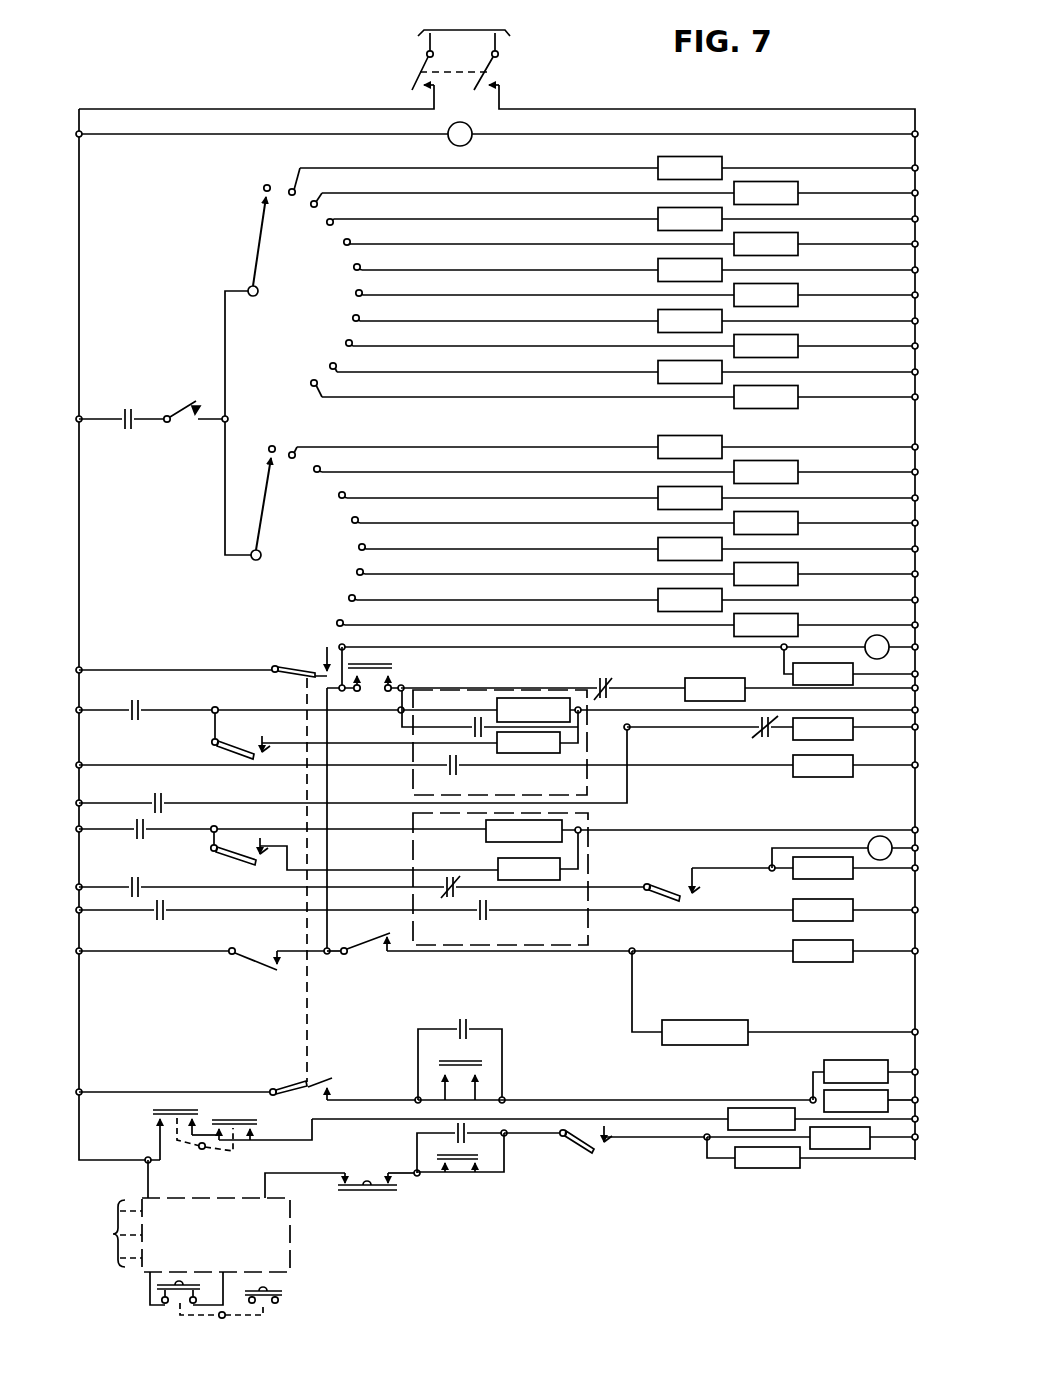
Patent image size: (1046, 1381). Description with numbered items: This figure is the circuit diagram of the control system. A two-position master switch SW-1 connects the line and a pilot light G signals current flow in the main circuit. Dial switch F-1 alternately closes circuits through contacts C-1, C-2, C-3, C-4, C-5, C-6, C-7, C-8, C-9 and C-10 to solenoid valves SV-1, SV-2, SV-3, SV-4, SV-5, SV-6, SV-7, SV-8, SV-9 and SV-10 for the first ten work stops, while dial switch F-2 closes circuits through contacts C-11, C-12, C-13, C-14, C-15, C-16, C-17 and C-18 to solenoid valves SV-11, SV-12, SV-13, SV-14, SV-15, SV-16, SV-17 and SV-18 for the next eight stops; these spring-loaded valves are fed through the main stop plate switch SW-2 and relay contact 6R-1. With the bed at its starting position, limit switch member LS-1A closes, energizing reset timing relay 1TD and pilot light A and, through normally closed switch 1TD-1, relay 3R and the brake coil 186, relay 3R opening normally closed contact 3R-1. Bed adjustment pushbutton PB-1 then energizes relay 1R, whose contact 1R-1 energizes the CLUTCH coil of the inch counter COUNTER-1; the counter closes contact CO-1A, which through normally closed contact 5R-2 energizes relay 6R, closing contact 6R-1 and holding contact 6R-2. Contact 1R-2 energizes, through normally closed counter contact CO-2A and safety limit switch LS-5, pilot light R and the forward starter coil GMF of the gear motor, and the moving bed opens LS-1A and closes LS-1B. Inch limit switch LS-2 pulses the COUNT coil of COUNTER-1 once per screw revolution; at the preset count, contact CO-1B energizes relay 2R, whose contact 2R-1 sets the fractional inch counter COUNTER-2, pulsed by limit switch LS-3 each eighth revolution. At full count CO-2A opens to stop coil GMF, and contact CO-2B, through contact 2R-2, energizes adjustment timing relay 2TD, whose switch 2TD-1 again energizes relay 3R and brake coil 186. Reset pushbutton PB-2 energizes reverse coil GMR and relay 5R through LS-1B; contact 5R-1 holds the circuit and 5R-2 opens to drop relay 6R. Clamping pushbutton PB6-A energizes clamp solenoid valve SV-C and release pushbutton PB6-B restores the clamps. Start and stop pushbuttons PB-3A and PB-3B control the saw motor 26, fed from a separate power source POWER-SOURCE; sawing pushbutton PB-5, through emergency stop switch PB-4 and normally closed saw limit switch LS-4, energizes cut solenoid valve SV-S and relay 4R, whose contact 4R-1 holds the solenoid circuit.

The master switch SW-1 is at (498, 65).
The pilot light G is at (470, 145).
The dial switch F-1 is at (258, 252).
The dial switch F-2 is at (258, 532).
The contact 6R-1 is at (132, 402).
The main stop plate switch SW-2 is at (190, 401).
The contact C-1 is at (296, 190).
The contact C-2 is at (317, 204).
The contact C-3 is at (332, 225).
The contact C-4 is at (349, 245).
The contact C-5 is at (359, 270).
The contact C-6 is at (360, 296).
The contact C-7 is at (356, 321).
The contact C-8 is at (349, 346).
The contact C-9 is at (333, 369).
The contact C-10 is at (313, 386).
The contact C-11 is at (292, 452).
The contact C-12 is at (317, 466).
The contact C-13 is at (342, 492).
The contact C-14 is at (355, 517).
The contact C-15 is at (363, 544).
The contact C-16 is at (361, 569).
The contact C-17 is at (353, 595).
The contact C-18 is at (341, 620).
The solenoid valve SV-1 is at (609, 168).
The solenoid valve SV-2 is at (620, 193).
The solenoid valve SV-3 is at (626, 219).
The solenoid valve SV-4 is at (634, 244).
The solenoid valve SV-5 is at (640, 270).
The solenoid valve SV-6 is at (640, 295).
The solenoid valve SV-7 is at (639, 321).
The solenoid valve SV-8 is at (635, 346).
The solenoid valve SV-9 is at (627, 372).
The solenoid valve SV-10 is at (620, 397).
The solenoid valve SV-11 is at (607, 447).
The solenoid valve SV-12 is at (620, 472).
The solenoid valve SV-13 is at (632, 498).
The solenoid valve SV-14 is at (639, 523).
The solenoid valve SV-15 is at (642, 549).
The solenoid valve SV-16 is at (641, 574).
The solenoid valve SV-17 is at (637, 600).
The solenoid valve SV-18 is at (631, 625).
The pilot light A is at (880, 624).
The reset timing relay 1TD is at (849, 664).
The switch member of starting limit switch LS-1A is at (212, 666).
The bed adjustment pushbutton switch PB-1 is at (392, 667).
The normally closed contact 3R-1 is at (600, 682).
The relay 1R is at (801, 689).
The normally open contact 1R-1 is at (142, 690).
The clutch coil CLUTCH is at (702, 770).
The inch signalling limit switch LS-2 is at (244, 748).
The normally open counter contact CO-1A is at (470, 718).
The count coil COUNT is at (537, 795).
The inch counter COUNTER-1 is at (500, 743).
The normally open counter contact CO-1B is at (448, 761).
The relay 2R is at (855, 766).
The contact 6R-2 is at (166, 788).
The normally closed contact 5R-2 is at (754, 737).
The relay 6R is at (855, 729).
The contact 2R-1 is at (143, 840).
The fractional inch signalling limit switch LS-3 is at (262, 874).
The fractional inch counter COUNTER-2 is at (500, 879).
The normally open contact 1R-2 is at (134, 882).
The normally closed counter contact CO-2A is at (444, 880).
The safety stop limit switch LS-5 is at (714, 883).
The forward starter coil GMF is at (855, 868).
The pilot light R is at (888, 824).
The contact 2R-2 is at (165, 920).
The normally open counter contact CO-2B is at (490, 909).
The adjustment timing relay 2TD is at (855, 910).
The normally open timing relay switch 2TD-1 is at (256, 958).
The normally closed timing relay switch 1TD-1 is at (385, 943).
The relay 3R is at (775, 951).
The brake coil 186 is at (712, 1020).
The switch member of starting limit switch LS-1B is at (292, 1084).
The contact 5R-1 is at (474, 1014).
The reset pushbutton switch PB-2 is at (485, 1054).
The reverse coil GMR is at (871, 1101).
The relay 5R is at (865, 1080).
The clamp solenoid valve SV-C is at (615, 1119).
The clamping pushbutton switch PB6-A is at (152, 1110).
The release pushbutton PB6-B is at (268, 1113).
The saw motor 26 is at (220, 1197).
The power source POWER-SOURCE is at (100, 1233).
The emergency stop pushbutton switch PB-4 is at (360, 1182).
The contact 4R-1 is at (460, 1148).
The sawing pushbutton switch PB-5 is at (455, 1162).
The saw limit switch LS-4 is at (605, 1148).
The relay 4R is at (812, 1138).
The cut solenoid valve SV-S is at (811, 1152).
The saw motor start button PB-3A is at (155, 1287).
The saw motor stop button PB-3B is at (283, 1292).